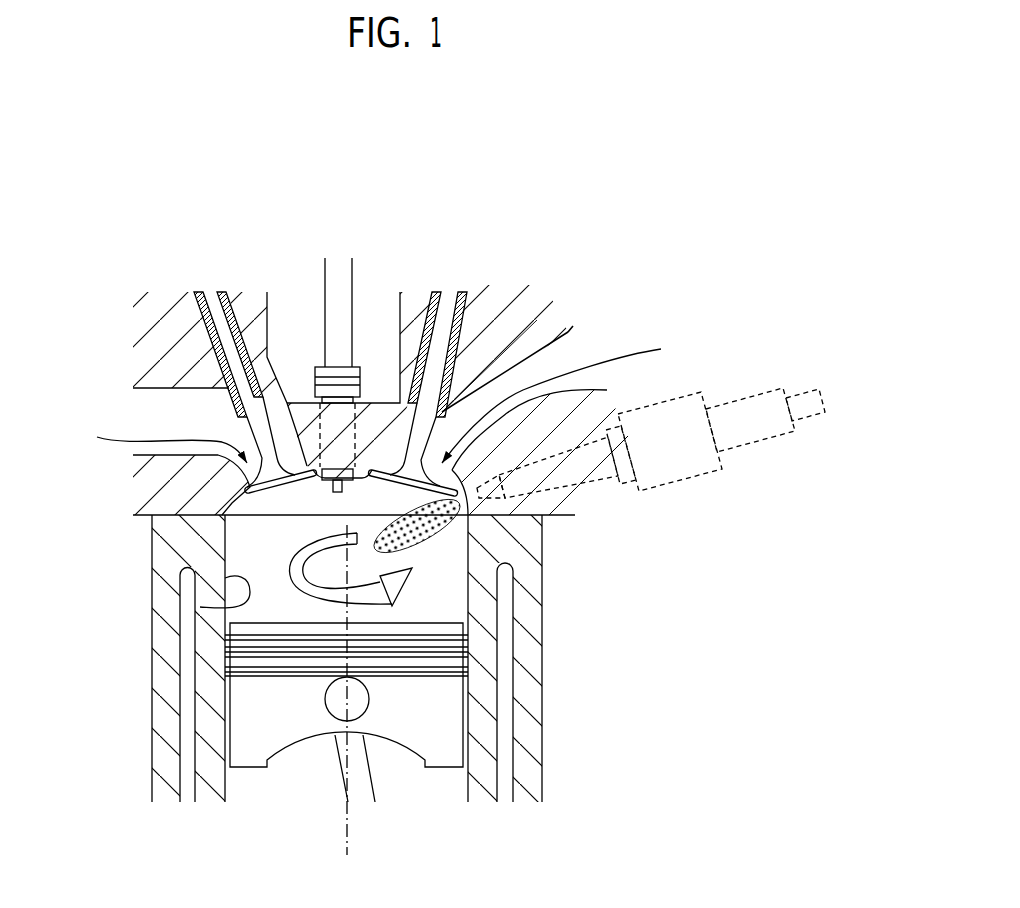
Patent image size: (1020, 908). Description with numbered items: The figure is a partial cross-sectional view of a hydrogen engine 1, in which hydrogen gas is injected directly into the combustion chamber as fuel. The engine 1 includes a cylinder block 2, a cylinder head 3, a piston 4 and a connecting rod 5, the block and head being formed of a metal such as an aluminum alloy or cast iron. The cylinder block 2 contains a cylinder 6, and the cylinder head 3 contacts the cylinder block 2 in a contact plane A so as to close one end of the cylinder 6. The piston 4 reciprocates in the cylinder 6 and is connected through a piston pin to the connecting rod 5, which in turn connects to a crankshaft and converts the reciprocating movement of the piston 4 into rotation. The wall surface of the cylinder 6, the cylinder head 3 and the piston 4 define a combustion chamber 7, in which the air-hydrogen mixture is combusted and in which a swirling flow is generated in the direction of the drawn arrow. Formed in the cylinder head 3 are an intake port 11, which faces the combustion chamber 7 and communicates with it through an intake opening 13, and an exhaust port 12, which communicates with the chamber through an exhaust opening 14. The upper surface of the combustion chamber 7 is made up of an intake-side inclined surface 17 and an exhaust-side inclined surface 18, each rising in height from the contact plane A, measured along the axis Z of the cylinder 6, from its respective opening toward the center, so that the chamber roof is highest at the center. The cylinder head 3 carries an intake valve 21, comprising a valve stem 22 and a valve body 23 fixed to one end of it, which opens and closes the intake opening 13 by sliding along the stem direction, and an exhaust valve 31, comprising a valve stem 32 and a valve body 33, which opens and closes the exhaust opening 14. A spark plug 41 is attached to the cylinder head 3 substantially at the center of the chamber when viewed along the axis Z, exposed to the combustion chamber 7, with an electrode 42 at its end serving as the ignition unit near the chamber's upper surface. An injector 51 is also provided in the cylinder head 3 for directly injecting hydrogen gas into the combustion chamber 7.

The hydrogen engine 1 is at (565, 215).
The cylinder block 2 is at (534, 778).
The cylinder head 3 is at (503, 333).
The piston 4 is at (445, 757).
The connecting rod 5 is at (363, 782).
The cylinder 6 is at (200, 607).
The combustion chamber 7 is at (440, 602).
The intake port 11 is at (565, 358).
The exhaust port 12 is at (160, 406).
The intake opening 13 is at (565, 396).
The exhaust opening 14 is at (158, 440).
The intake-side inclined surface 17 is at (365, 478).
The exhaust-side inclined surface 18 is at (338, 490).
The intake valve 21 is at (454, 290).
The valve stem 22 is at (420, 292).
The valve body 23 is at (410, 295).
The exhaust valve 31 is at (209, 290).
The valve stem 32 is at (245, 292).
The valve body 33 is at (306, 452).
The spark plug 41 is at (340, 276).
The electrode 42 is at (243, 490).
The injector 51 is at (727, 398).
The contact plane A is at (133, 518).
The axis Z is at (347, 845).